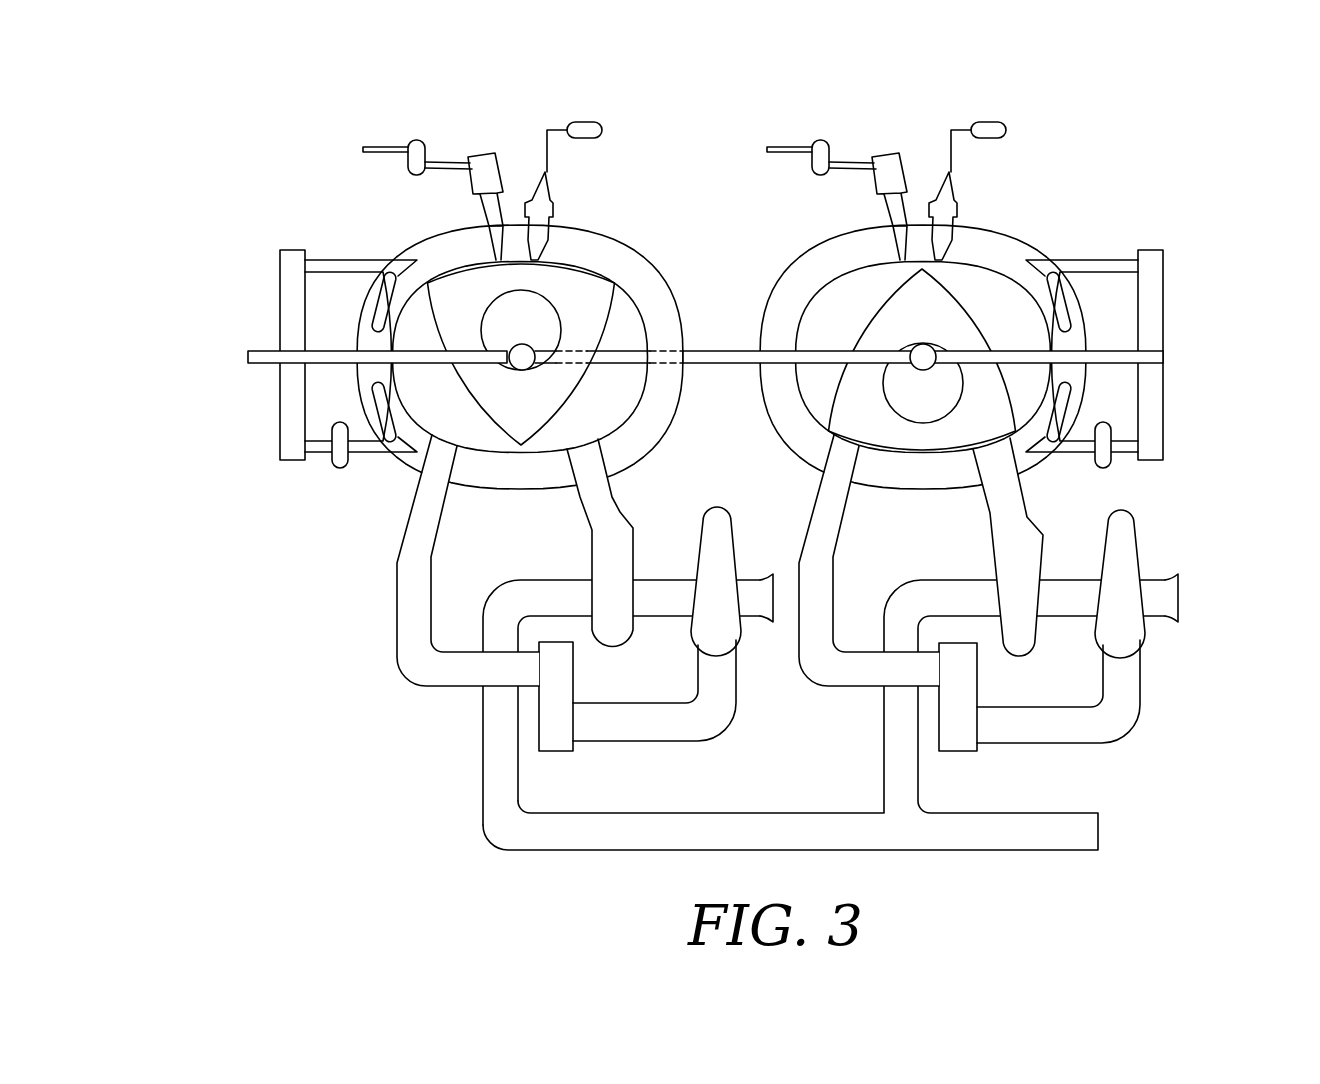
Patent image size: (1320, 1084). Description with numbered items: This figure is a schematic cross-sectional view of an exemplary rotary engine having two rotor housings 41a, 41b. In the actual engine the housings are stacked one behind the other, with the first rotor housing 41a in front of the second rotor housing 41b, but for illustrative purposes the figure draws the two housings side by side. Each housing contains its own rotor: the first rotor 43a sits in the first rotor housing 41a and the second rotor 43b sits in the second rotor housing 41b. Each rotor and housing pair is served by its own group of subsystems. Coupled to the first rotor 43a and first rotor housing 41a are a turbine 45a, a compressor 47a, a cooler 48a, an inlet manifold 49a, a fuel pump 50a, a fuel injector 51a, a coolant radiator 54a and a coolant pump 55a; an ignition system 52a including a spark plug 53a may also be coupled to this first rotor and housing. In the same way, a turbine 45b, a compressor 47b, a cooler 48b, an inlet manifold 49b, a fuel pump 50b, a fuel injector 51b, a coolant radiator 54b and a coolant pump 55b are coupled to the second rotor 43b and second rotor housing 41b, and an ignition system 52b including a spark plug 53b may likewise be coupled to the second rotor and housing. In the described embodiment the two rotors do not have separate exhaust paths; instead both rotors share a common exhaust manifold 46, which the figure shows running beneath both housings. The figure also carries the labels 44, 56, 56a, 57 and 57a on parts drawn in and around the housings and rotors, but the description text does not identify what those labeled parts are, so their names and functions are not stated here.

The first rotor housing 41a is at (597, 248).
The second rotor housing 41b is at (836, 255).
The first rotor 43a is at (462, 287).
The second rotor 43b is at (937, 303).
The eccentric output shaft 44 is at (735, 377).
The turbine 45a is at (620, 556).
The turbine 45b is at (1017, 640).
The common exhaust manifold 46 is at (570, 852).
The compressor 47a is at (723, 630).
The compressor 47b is at (1130, 627).
The cooler 48a is at (553, 712).
The cooler 48b is at (962, 753).
The inlet manifold 49a is at (397, 607).
The inlet manifold 49b is at (869, 560).
The fuel pump 50a is at (417, 139).
The fuel pump 50b is at (821, 139).
The fuel injector 51a is at (483, 153).
The fuel injector 51b is at (887, 153).
The ignition system 52a is at (580, 122).
The ignition system 52b is at (985, 122).
The spark plug 53a is at (553, 183).
The spark plug 53b is at (943, 216).
The coolant radiator 54a is at (280, 441).
The coolant radiator 54b is at (1163, 447).
The coolant pump 55a is at (337, 468).
The coolant pump 55b is at (1107, 475).
The rotor bearing 56 is at (965, 383).
The rotor bearing 56a is at (477, 323).
The eccentric shaft journal 57 is at (943, 347).
The eccentric shaft journal 57a is at (533, 347).